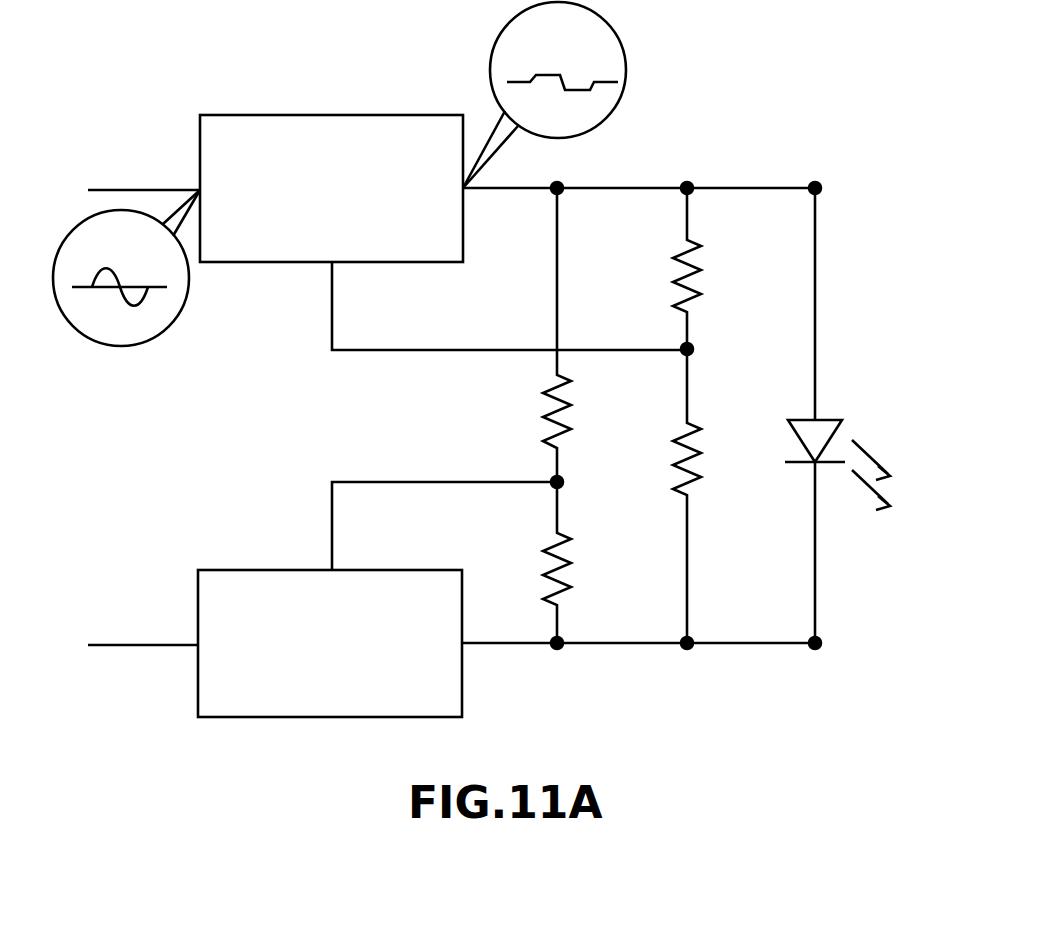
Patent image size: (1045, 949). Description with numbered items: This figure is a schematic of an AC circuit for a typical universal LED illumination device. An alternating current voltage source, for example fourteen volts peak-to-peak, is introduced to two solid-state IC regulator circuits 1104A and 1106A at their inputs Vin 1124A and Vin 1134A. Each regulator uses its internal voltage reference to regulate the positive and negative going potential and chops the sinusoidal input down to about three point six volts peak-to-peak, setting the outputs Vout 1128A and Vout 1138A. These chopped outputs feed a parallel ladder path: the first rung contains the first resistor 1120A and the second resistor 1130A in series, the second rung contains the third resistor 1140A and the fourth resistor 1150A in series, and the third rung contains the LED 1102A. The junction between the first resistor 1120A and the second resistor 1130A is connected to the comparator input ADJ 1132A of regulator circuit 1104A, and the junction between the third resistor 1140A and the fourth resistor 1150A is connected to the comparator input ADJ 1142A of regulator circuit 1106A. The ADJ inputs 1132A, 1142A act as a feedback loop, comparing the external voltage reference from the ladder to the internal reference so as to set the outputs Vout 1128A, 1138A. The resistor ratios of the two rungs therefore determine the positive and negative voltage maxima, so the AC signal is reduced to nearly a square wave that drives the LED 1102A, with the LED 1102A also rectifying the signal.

The IC regulator circuit 1104A is at (288, 115).
The Vin input 1124A is at (224, 173).
The Vout output 1128A is at (420, 200).
The comparator input ADJ 1132A is at (357, 240).
The resistor R4 1150A is at (683, 288).
The resistor R1 1120A is at (556, 428).
The resistor R3 1140A is at (695, 458).
The LED 1102A is at (873, 450).
The resistor R2 1130A is at (568, 578).
The IC regulator circuit 1106A is at (212, 570).
The comparator input ADJ 1142A is at (300, 585).
The Vin input 1134A is at (230, 622).
The Vout output 1138A is at (420, 665).